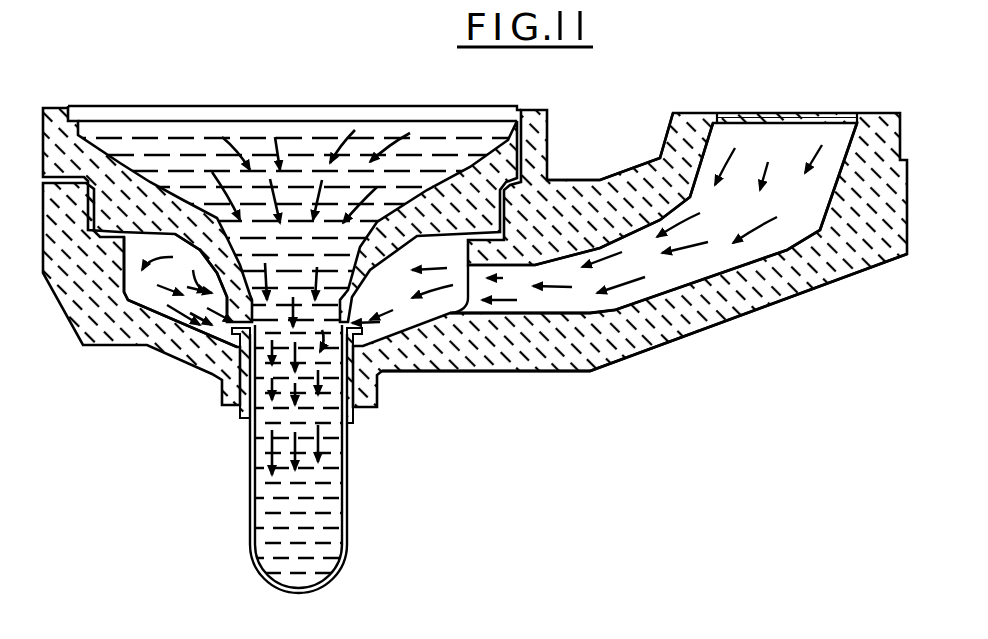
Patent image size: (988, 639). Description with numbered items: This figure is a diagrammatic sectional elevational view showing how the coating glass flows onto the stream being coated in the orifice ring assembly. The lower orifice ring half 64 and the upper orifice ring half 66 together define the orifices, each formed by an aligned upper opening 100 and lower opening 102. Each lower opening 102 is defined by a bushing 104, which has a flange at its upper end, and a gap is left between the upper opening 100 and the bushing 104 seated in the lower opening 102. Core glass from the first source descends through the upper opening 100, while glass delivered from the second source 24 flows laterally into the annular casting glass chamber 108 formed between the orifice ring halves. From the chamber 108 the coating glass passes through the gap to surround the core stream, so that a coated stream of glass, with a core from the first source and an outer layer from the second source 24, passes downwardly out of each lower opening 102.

The second source 24 is at (807, 105).
The upper orifice ring half 66 is at (612, 184).
The lower orifice ring half 64 is at (700, 318).
The upper opening 100 is at (267, 307).
The annular casting glass chamber 108 is at (152, 298).
The bushing 104 is at (243, 414).
The lower opening 102 is at (345, 371).